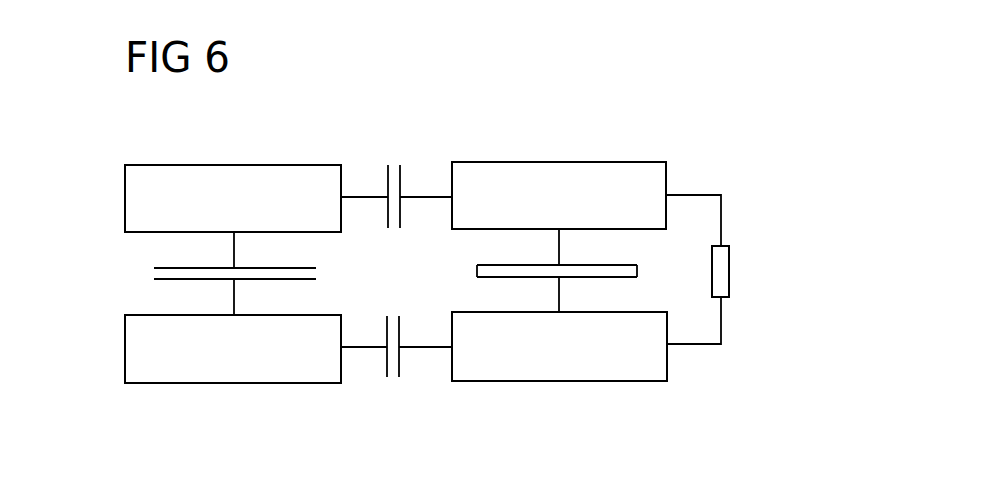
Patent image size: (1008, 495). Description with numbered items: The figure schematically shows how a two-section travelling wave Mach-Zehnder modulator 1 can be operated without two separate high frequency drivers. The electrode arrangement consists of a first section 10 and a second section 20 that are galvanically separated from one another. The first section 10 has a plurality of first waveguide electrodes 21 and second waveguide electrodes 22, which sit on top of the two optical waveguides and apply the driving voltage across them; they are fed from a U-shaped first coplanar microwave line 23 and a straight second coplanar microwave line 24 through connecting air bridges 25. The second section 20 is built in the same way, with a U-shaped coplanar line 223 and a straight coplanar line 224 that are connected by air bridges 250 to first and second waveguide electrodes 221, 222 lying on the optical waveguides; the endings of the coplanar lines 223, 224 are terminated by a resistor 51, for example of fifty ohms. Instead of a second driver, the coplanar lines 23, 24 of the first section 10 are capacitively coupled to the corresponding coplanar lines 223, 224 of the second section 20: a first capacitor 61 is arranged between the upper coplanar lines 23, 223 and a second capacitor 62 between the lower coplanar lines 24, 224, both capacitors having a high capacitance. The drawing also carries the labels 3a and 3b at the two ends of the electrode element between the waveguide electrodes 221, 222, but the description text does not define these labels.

The Mach-Zehnder modulator 1 is at (727, 178).
The first section 10 is at (105, 155).
The second section 20 is at (627, 140).
The first waveguide electrodes 21 is at (205, 252).
The second waveguide electrodes 22 is at (182, 280).
The first coplanar microwave line 23 is at (263, 180).
The second coplanar microwave line 24 is at (257, 373).
The air bridges 25 is at (235, 255).
The first capacitor 61 is at (402, 172).
The second capacitor 62 is at (400, 365).
The first waveguide electrodes of the second section 221 is at (507, 263).
The second waveguide electrodes of the second section 222 is at (507, 278).
The U-shaped coplanar line 223 is at (525, 178).
The straight coplanar line 224 is at (583, 367).
The air bridges 250 is at (560, 252).
The first end of piezoelectric element 3a is at (477, 272).
The second end of piezoelectric element 3b is at (638, 270).
The resistor 51 is at (722, 268).